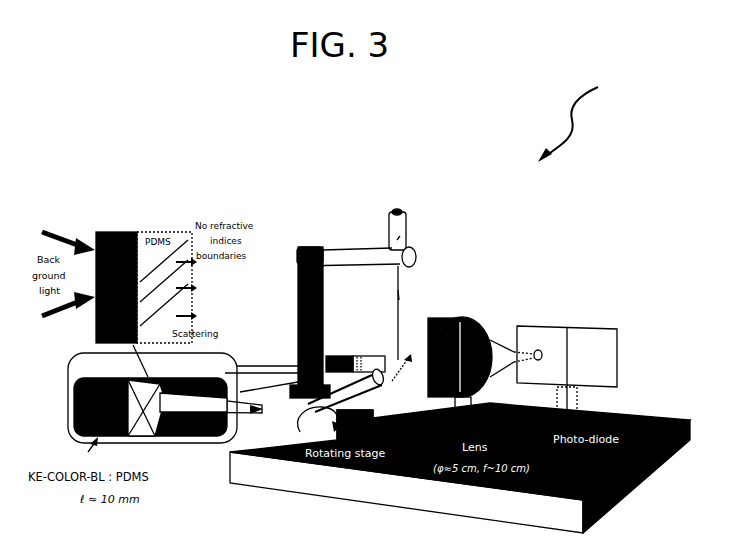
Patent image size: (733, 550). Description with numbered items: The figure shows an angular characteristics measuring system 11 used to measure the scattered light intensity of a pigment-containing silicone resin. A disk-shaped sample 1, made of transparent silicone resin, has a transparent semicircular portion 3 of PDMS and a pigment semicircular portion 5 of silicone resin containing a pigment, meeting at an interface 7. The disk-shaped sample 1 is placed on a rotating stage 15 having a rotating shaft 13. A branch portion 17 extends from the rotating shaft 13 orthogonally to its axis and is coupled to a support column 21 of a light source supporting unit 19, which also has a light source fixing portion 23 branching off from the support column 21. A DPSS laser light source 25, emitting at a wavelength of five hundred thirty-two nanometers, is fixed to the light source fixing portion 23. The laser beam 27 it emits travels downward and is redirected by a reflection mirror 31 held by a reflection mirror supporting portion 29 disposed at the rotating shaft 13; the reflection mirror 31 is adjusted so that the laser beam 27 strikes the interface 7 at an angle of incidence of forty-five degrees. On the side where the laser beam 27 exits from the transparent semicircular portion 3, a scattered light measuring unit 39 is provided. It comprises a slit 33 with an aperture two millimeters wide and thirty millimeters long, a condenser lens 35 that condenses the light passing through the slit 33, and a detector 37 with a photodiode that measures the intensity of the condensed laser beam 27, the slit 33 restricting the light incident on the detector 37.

The disk-shaped sample 1 is at (378, 358).
The transparent semicircular portion 3 is at (196, 380).
The pigment semicircular portion 5 is at (128, 378).
The interface 7 is at (150, 432).
The angular characteristics measuring system 11 is at (617, 86).
The rotating shaft 13 is at (370, 398).
The rotating stage 15 is at (362, 418).
The branch portion 17 is at (300, 384).
The light source supporting unit 19 is at (487, 149).
The support column 21 is at (303, 247).
The light source fixing portion 23 is at (413, 252).
The DPSS laser light source 25 is at (400, 237).
The laser beam 27 is at (398, 290).
The reflection mirror supporting portion 29 is at (335, 405).
The reflection mirror 31 is at (399, 372).
The slit 33 is at (460, 321).
The condenser lens 35 is at (485, 336).
The detector 37 is at (600, 329).
The scattered light measuring unit 39 is at (440, 315).